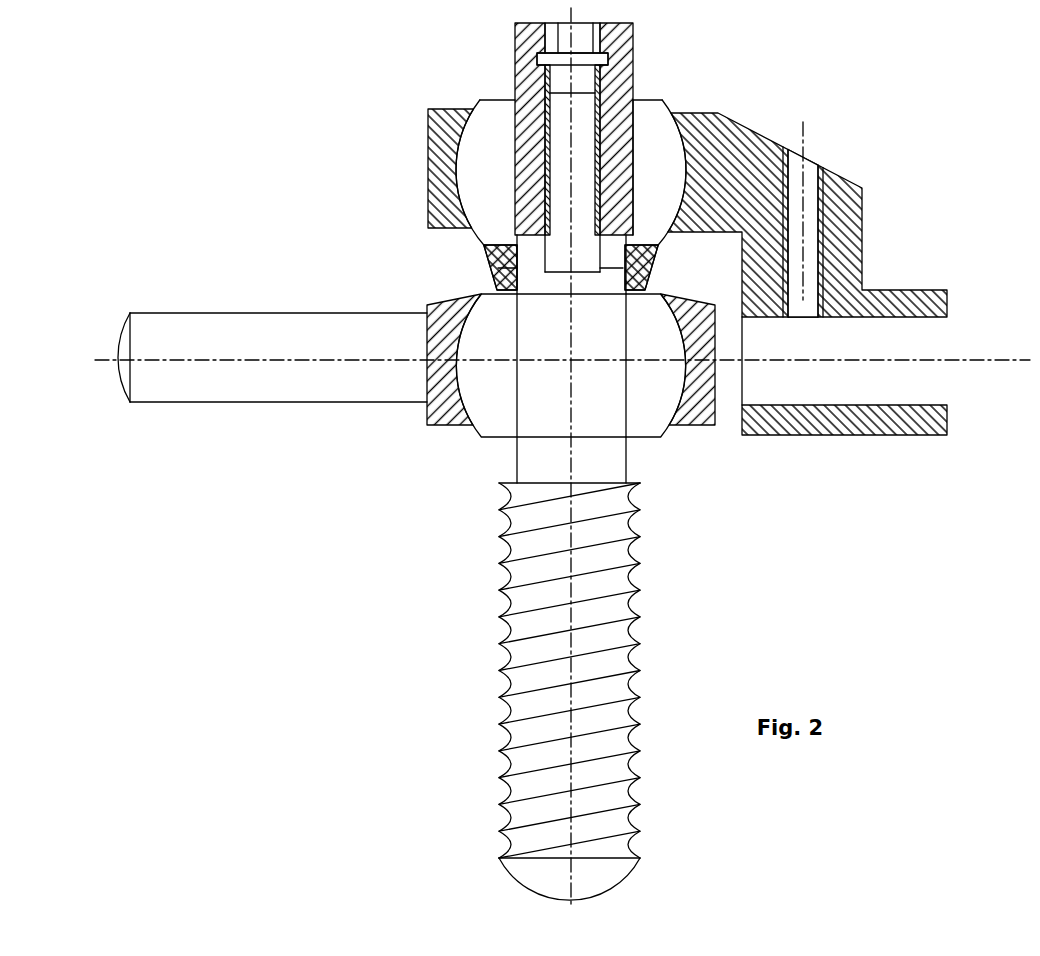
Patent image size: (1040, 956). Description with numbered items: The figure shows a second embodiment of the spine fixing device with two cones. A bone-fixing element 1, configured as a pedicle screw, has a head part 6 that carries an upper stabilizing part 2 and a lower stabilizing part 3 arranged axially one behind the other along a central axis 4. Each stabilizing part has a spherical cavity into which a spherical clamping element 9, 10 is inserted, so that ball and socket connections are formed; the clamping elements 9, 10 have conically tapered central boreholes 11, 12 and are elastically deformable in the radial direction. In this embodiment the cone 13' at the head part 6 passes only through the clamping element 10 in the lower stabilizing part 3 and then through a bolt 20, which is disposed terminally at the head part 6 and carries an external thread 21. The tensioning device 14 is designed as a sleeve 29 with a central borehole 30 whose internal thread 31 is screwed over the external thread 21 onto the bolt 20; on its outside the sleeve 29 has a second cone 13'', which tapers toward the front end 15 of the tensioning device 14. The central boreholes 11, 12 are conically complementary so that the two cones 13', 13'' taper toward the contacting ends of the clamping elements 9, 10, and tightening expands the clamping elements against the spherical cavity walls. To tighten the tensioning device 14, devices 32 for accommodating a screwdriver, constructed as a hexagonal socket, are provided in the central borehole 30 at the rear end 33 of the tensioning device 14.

The bone-fixing element 1 is at (652, 581).
The upper stabilizing part 2 is at (700, 217).
The lower stabilizing part 3 is at (427, 403).
The central axis 4 is at (563, 635).
The head part 6 is at (607, 455).
The clamping element 9 is at (485, 232).
The clamping element 10 is at (485, 412).
The central borehole 11 is at (528, 240).
The central borehole 12 is at (527, 282).
The cone 13' is at (515, 429).
The second cone 13'' is at (484, 167).
The tensioning device 14 is at (642, 72).
The front end 15 is at (625, 224).
The bolt 20 is at (583, 112).
The external thread 21 is at (598, 260).
The sleeve 29 is at (518, 111).
The central borehole 30 is at (563, 75).
The internal thread 31 is at (545, 80).
The devices for accommodating a screwdriver 32 is at (578, 37).
The rear end 33 is at (515, 35).